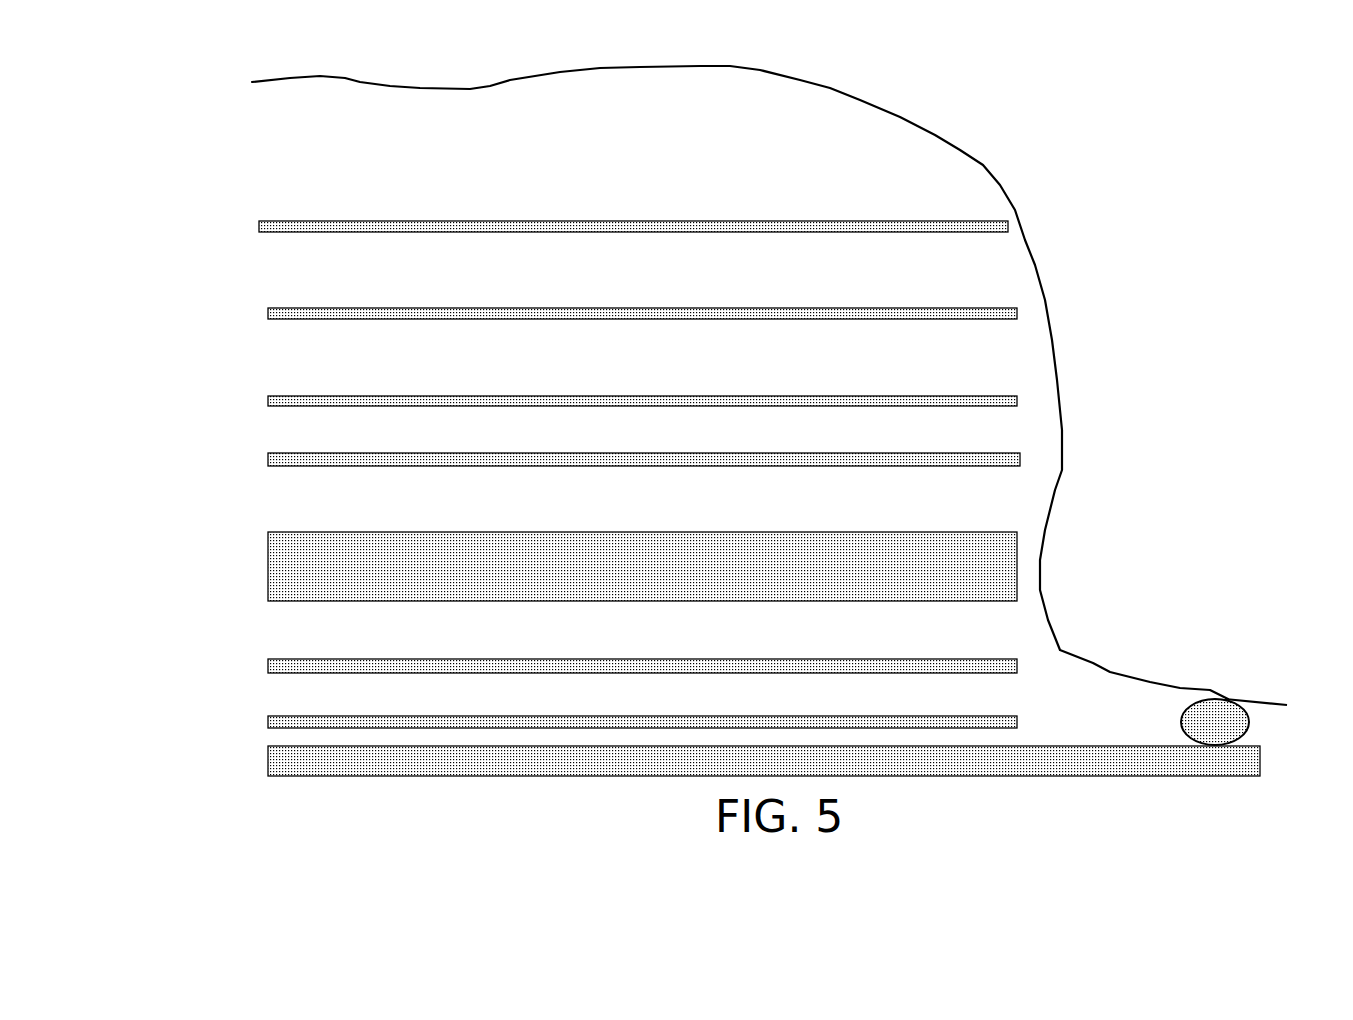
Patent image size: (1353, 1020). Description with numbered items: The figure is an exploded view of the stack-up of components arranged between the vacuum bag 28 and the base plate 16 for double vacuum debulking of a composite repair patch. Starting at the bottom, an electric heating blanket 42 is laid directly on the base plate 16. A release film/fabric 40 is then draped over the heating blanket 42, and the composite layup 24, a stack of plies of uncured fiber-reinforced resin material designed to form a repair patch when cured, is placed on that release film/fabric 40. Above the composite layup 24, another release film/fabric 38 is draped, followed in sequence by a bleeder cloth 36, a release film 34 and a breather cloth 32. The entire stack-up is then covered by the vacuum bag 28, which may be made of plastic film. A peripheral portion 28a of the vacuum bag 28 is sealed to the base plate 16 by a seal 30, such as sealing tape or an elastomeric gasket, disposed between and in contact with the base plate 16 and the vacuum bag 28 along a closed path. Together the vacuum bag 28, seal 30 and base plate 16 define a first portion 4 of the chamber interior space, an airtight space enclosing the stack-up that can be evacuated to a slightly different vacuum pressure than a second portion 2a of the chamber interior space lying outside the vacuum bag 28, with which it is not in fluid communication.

The first portion of the chamber interior space 4 is at (845, 115).
The second portion of the chamber interior space 2a is at (1027, 91).
The vacuum bag 28 is at (986, 164).
The peripheral portion of the vacuum bag 28a is at (1228, 697).
The breather cloth 32 is at (1010, 226).
The release film 34 is at (1020, 313).
The bleeder cloth 36 is at (1020, 398).
The release film/fabric 38 is at (1020, 458).
The composite layup 24 is at (1020, 528).
The release film/fabric 40 is at (1020, 668).
The electric heating blanket 42 is at (1020, 724).
The base plate 16 is at (1155, 777).
The seal 30 is at (1252, 720).